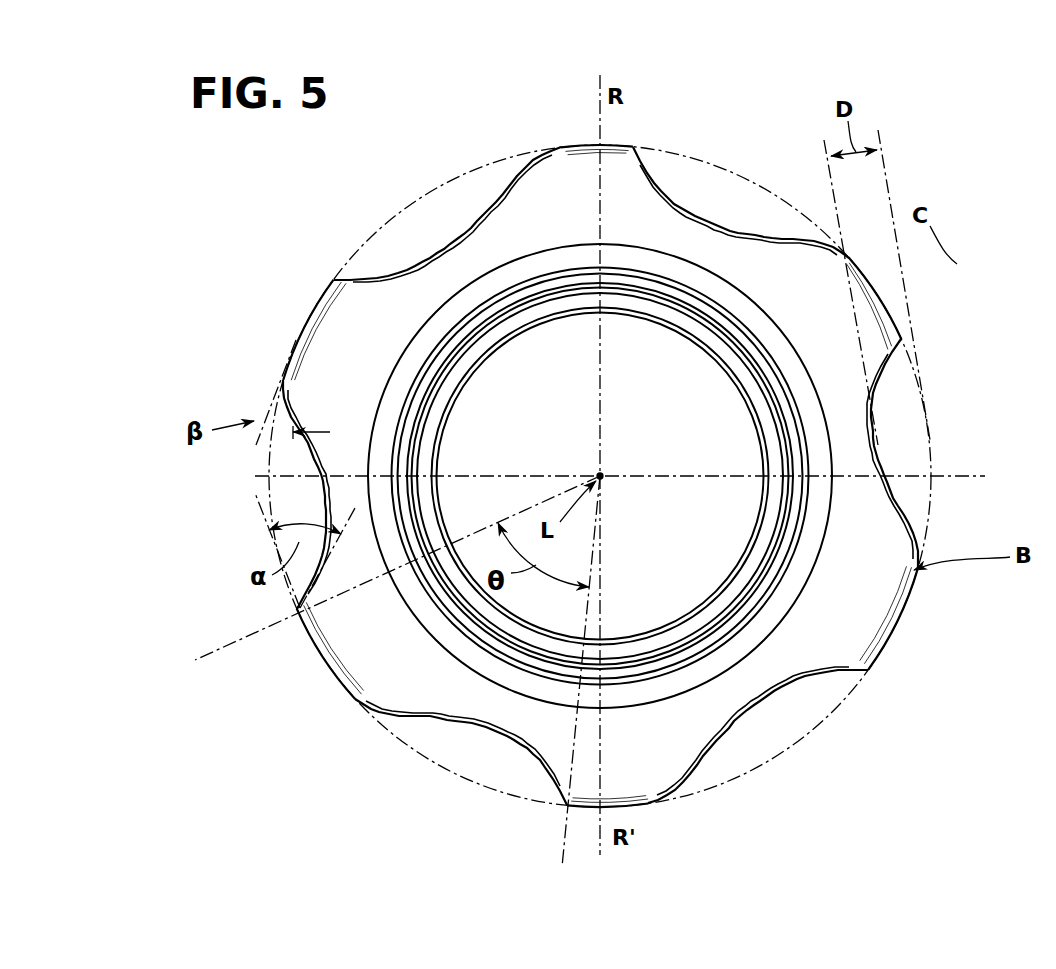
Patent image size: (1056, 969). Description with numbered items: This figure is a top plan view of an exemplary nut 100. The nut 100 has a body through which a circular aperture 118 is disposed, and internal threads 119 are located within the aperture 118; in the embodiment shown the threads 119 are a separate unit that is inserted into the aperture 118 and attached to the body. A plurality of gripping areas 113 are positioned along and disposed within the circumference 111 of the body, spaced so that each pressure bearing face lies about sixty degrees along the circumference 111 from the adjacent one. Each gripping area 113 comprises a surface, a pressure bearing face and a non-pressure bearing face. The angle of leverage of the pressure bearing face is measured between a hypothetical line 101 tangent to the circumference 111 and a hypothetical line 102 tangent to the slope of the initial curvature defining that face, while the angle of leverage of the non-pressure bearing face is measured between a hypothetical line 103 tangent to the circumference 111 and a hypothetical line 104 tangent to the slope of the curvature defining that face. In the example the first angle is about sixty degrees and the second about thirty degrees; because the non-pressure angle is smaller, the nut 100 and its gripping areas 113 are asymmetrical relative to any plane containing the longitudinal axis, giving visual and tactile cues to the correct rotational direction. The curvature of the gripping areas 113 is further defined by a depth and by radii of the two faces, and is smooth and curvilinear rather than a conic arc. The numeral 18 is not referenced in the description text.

The nut 100 is at (960, 134).
The hypothetical line 101 is at (256, 503).
The hypothetical line 102 is at (355, 511).
The hypothetical line 103 is at (257, 412).
The hypothetical line 104 is at (298, 427).
The circumference 111 is at (312, 311).
The gripping areas 113 is at (424, 226).
The bore 18 is at (497, 388).
The circular aperture 118 is at (549, 603).
The internal threads 119 is at (748, 372).